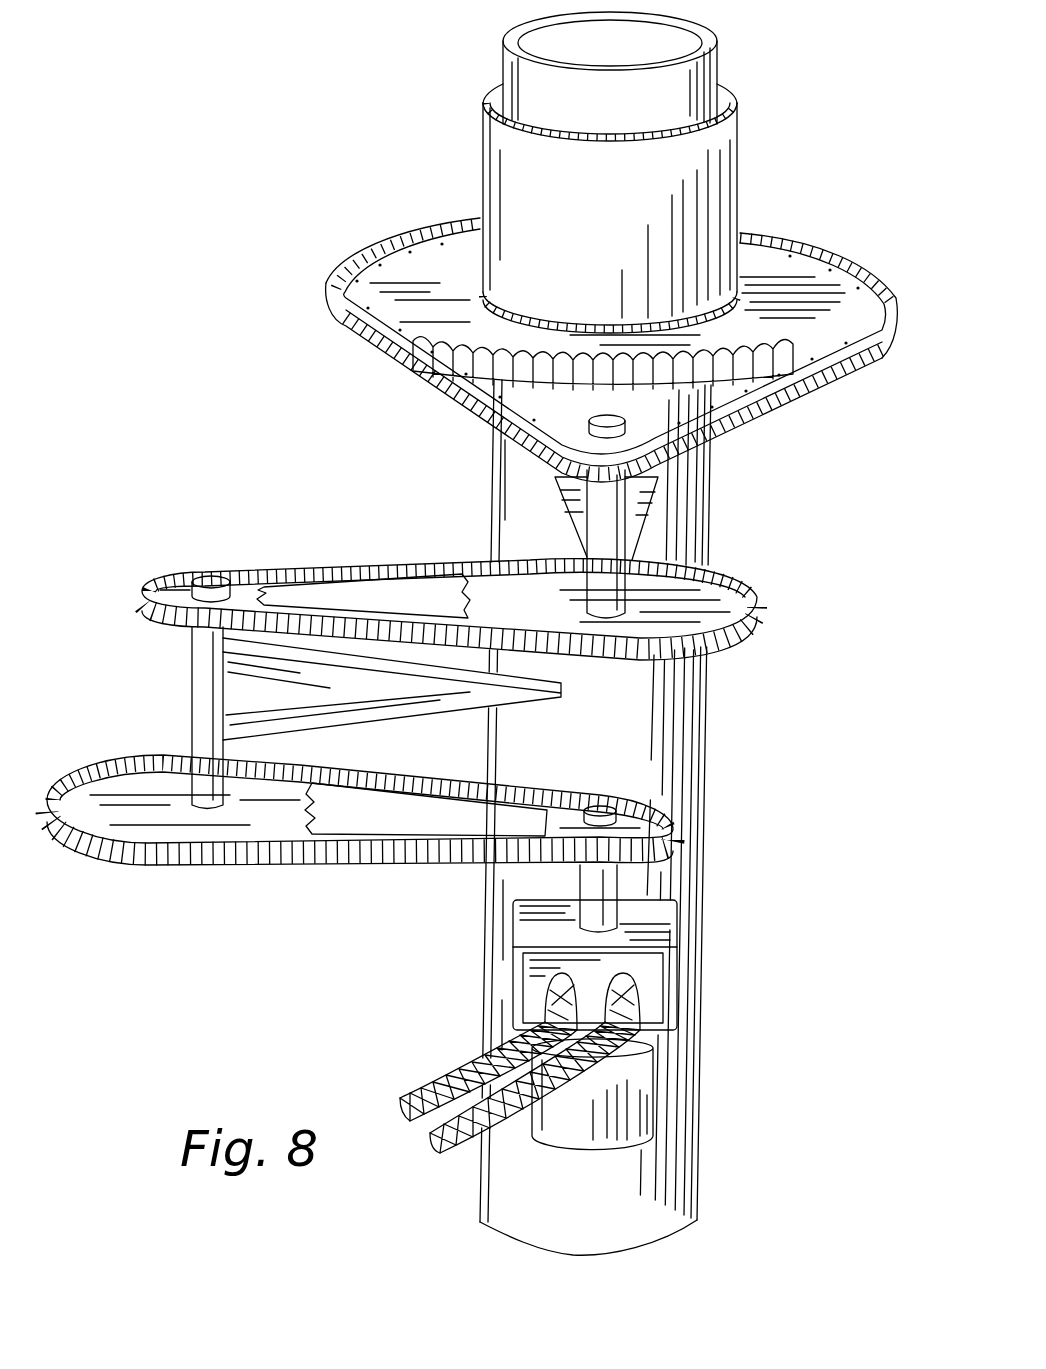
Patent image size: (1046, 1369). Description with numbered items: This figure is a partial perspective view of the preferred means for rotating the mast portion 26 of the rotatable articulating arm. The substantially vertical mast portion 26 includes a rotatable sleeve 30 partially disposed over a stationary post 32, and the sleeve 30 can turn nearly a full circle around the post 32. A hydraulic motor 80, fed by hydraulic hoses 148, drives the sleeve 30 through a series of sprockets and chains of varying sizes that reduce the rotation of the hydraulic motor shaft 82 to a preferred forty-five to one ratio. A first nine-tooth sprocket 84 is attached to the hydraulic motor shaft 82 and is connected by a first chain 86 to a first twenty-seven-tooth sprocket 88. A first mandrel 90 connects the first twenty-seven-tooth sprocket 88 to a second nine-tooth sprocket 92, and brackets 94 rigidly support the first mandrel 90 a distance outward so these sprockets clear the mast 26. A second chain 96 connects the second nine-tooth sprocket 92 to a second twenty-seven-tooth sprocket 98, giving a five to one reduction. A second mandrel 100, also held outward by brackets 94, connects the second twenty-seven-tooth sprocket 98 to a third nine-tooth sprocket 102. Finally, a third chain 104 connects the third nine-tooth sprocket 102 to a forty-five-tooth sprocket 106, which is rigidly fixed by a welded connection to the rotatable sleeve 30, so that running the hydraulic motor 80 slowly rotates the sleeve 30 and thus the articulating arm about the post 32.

The vertical mast portion 26 is at (770, 136).
The rotatable sleeve 30 is at (500, 152).
The stationary post 32 is at (503, 50).
The hydraulic motor 80 is at (640, 1088).
The hydraulic motor shaft 82 is at (600, 892).
The first 9-tooth sprocket 84 is at (665, 808).
The first chain 86 is at (420, 862).
The first 27-tooth sprocket 88 is at (208, 835).
The first mandrel 90 is at (197, 701).
The second 9-tooth sprocket 92 is at (186, 570).
The brackets 94 is at (640, 513).
The second chain 96 is at (355, 558).
The second 27-tooth sprocket 98 is at (730, 580).
The second mandrel 100 is at (597, 580).
The third 9-tooth sprocket 102 is at (565, 425).
The third chain 104 is at (768, 407).
The 45-tooth sprocket 106 is at (820, 273).
The hoses 148 is at (425, 1075).